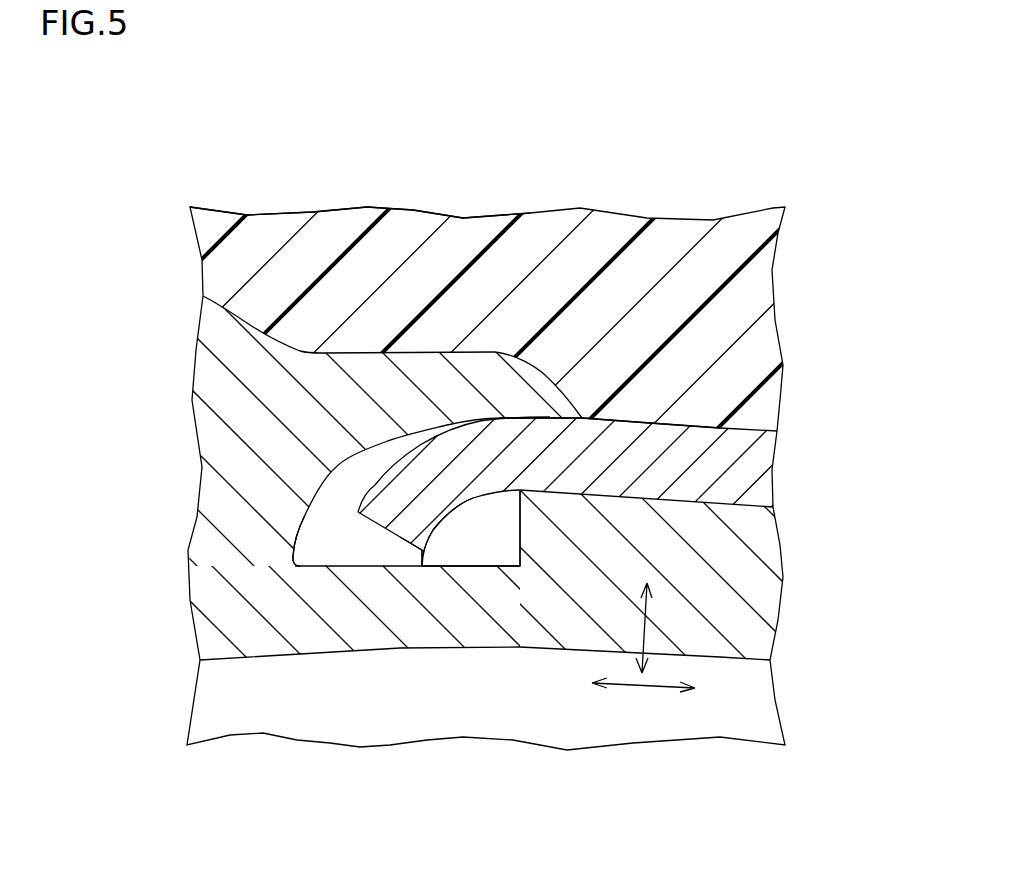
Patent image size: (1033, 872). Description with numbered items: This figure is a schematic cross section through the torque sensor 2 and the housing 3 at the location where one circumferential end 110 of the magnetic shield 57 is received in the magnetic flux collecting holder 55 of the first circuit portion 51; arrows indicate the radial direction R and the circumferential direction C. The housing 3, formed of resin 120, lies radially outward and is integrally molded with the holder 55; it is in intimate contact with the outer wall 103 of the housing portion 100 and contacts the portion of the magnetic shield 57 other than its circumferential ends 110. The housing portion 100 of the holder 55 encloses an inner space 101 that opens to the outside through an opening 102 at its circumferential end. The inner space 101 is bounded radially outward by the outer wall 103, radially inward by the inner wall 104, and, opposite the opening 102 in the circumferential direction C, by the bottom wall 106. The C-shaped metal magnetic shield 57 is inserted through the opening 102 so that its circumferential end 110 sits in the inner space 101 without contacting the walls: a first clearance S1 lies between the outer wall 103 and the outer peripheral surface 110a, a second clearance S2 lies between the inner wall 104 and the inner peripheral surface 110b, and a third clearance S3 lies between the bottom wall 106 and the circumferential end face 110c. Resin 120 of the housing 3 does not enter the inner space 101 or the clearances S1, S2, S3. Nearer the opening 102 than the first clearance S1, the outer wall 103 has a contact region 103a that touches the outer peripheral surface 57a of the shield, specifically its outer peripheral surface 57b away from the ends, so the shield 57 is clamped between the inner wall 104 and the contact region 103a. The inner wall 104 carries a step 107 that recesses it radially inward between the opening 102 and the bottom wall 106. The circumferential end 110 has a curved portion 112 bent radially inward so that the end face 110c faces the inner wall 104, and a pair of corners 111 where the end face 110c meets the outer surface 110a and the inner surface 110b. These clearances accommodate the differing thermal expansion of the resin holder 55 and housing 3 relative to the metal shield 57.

The torque sensor 2 is at (229, 273).
The housing 3 is at (478, 294).
The resin 120 is at (478, 294).
The first circuit portion 51 is at (516, 437).
The magnetic flux collecting holder 55 is at (586, 558).
The magnetic shield 57 is at (500, 422).
The outer peripheral surface of the magnetic shield 57a is at (667, 86).
The outer peripheral surface of the portion other than the circumferential ends 57b is at (640, 428).
The housing portion 100 is at (481, 335).
The inner space 101 is at (334, 550).
The opening 102 is at (547, 465).
The outer wall 103 is at (543, 278).
The contact region 103a is at (545, 392).
The inner wall 104 is at (432, 578).
The bottom wall 106 is at (440, 480).
The step 107 is at (524, 520).
The circumferential end 110 is at (336, 443).
The outer peripheral surface of the circumferential end 110a is at (382, 455).
The inner peripheral surface of the circumferential end 110b is at (436, 532).
The circumferential end face 110c is at (383, 525).
The corner 111 is at (332, 532).
The curved portion 112 is at (405, 538).
The first clearance S1 is at (380, 460).
The second clearance S2 is at (478, 535).
The third clearance S3 is at (306, 558).
The radial direction R is at (645, 637).
The circumferential direction C is at (633, 690).